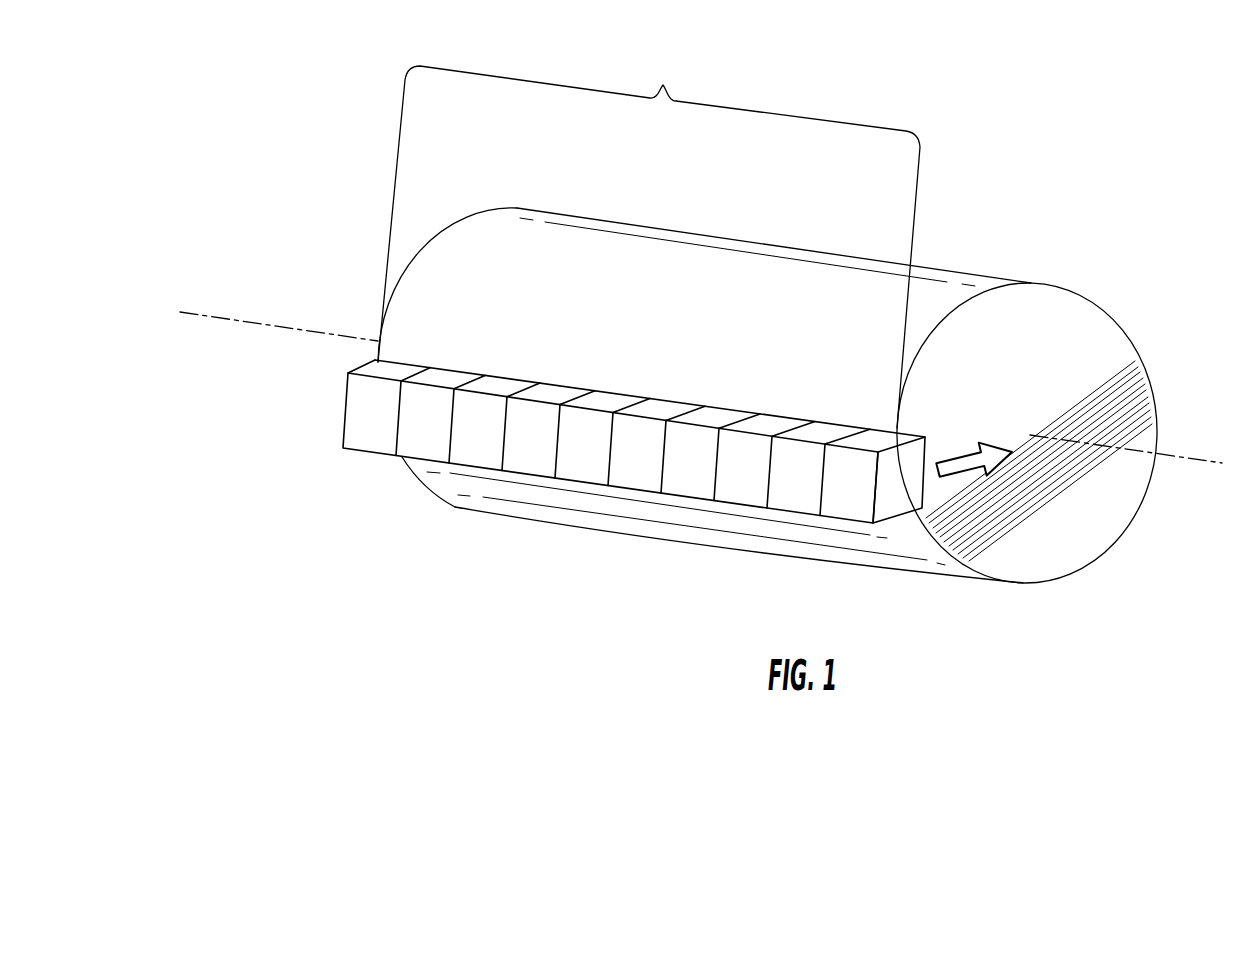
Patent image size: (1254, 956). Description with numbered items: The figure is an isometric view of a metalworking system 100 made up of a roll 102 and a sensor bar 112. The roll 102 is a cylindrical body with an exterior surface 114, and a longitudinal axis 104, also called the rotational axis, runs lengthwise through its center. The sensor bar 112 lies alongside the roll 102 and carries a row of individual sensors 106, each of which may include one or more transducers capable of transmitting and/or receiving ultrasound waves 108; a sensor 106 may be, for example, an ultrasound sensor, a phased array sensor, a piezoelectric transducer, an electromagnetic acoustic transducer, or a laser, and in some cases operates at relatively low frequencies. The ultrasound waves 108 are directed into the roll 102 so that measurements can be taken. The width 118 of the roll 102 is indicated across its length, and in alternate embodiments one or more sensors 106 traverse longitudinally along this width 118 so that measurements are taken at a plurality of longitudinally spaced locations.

The metalworking system 100 is at (252, 188).
The roll 102 is at (579, 190).
The longitudinal axis 104 is at (1172, 458).
The sensor 106 is at (433, 447).
The ultrasound waves 108 is at (978, 450).
The sensor bar 112 is at (323, 357).
The exterior surface 114 is at (718, 263).
The width 118 is at (649, 238).